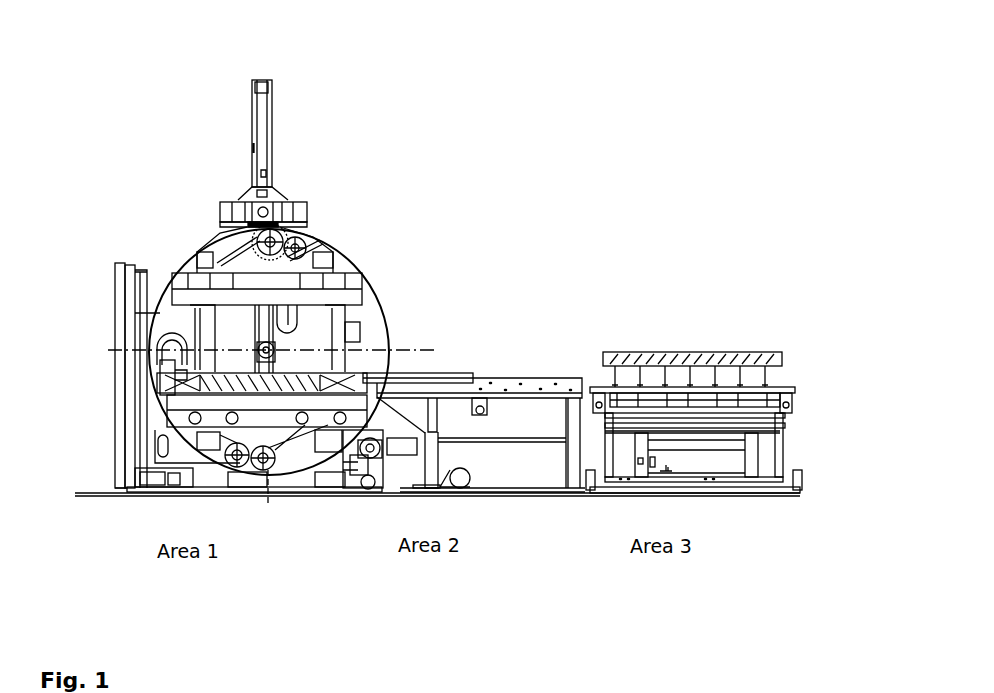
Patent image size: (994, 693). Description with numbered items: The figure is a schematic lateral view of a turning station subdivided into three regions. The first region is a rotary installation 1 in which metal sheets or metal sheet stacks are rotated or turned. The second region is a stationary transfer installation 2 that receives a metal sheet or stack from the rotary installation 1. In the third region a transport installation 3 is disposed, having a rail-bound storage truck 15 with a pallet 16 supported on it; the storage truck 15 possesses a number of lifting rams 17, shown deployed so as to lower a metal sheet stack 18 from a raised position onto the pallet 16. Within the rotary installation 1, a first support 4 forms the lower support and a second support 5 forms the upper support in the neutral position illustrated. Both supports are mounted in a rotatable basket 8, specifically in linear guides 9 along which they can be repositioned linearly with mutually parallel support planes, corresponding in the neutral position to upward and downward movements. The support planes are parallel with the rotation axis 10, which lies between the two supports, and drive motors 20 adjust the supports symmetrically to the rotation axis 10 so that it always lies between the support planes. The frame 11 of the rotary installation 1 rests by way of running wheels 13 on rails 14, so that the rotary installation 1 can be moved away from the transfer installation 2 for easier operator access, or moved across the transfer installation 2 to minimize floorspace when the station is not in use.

The rotary installation 1 is at (354, 78).
The transfer installation 2 is at (507, 223).
The transport installation 3 is at (613, 203).
The first support 4 is at (187, 403).
The second support 5 is at (192, 292).
The rotatable basket 8 is at (163, 322).
The linear guides 9 is at (345, 322).
The rotation axis 10 is at (285, 346).
The frame 11 is at (127, 450).
The running wheels 13 is at (368, 476).
The rails 14 is at (530, 497).
The storage truck 15 is at (747, 455).
The pallet 16 is at (735, 390).
The lifting rams 17 is at (722, 385).
The metal sheet stack 18 is at (693, 362).
The drive motors 20 is at (300, 247).